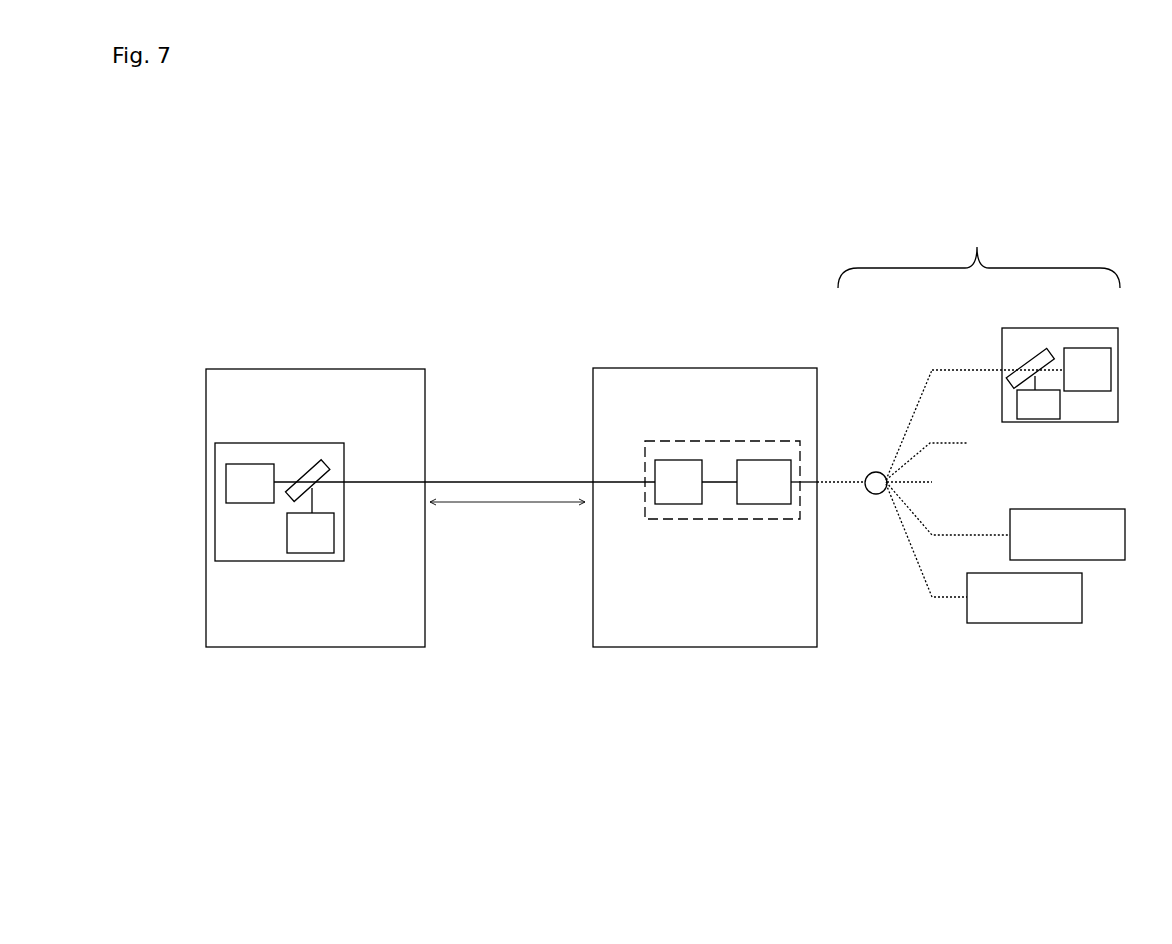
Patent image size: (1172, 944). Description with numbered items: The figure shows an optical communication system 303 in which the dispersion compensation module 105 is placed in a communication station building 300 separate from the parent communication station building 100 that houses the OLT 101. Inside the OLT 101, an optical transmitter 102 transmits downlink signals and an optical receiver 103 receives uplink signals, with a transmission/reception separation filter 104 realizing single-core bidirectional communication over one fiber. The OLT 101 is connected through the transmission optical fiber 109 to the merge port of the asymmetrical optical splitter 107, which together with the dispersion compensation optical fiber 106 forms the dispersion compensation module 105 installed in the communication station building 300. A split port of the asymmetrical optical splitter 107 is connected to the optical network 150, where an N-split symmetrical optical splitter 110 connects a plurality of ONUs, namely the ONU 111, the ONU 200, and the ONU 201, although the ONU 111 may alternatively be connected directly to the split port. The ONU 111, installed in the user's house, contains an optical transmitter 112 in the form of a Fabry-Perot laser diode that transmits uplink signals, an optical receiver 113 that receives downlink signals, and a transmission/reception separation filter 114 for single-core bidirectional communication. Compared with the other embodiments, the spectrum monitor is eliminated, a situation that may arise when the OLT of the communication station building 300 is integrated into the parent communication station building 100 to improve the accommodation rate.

The communication station building 100 is at (383, 363).
The OLT 101 is at (285, 440).
The optical transmitter 102 is at (228, 460).
The optical receiver 103 is at (297, 557).
The transmission/reception separation filter 104 is at (327, 457).
The dispersion compensation module 105 is at (695, 437).
The dispersion compensation optical fiber 106 is at (690, 505).
The asymmetrical optical splitter 107 is at (777, 505).
The transmission optical fiber 109 is at (442, 478).
The N-split symmetrical optical splitter 110 is at (868, 493).
The ONU 111 is at (1030, 328).
The optical transmitter 112 is at (1107, 397).
The optical receiver 113 is at (1030, 427).
The transmission/reception separation filter 114 is at (1026, 348).
The optical network 150 is at (979, 253).
The ONU 200 is at (1050, 508).
The ONU 201 is at (1057, 625).
The communication station building 300 is at (639, 365).
The optical communication system 303 is at (727, 353).